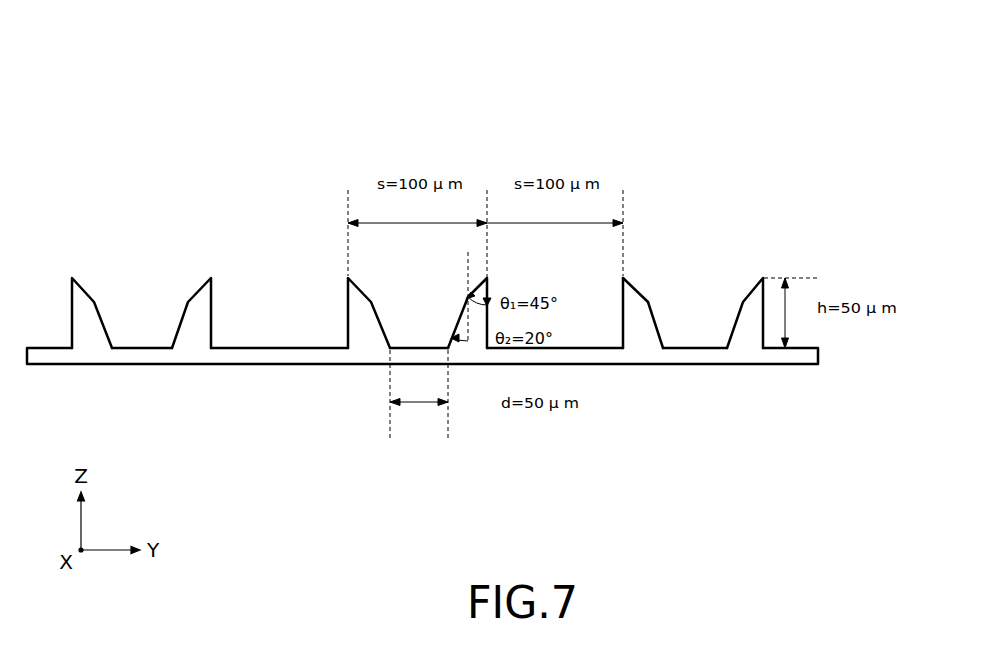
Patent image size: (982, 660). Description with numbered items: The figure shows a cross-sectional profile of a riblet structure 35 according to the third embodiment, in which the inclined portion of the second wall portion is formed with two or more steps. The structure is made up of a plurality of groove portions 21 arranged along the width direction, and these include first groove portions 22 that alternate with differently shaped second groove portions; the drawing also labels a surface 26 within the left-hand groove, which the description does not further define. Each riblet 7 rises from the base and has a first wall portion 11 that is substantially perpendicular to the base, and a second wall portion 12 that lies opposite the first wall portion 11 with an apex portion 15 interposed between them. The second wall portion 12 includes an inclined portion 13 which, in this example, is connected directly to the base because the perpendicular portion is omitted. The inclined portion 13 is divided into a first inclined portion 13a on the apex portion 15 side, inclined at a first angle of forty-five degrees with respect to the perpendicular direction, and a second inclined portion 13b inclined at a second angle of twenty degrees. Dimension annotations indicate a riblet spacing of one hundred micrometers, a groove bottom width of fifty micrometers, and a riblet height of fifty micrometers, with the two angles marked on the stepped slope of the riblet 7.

The riblet structure 35 is at (481, 72).
The groove portions 21 is at (288, 192).
The first inclined surface of groove 26 is at (138, 305).
The first groove portions 22 is at (278, 298).
The riblet 7 is at (376, 292).
The first wall portion 11 is at (622, 317).
The inclined portion 13 is at (635, 187).
The first inclined portion 13a is at (636, 289).
The second inclined portion 13b is at (651, 308).
The second wall portion 12 is at (654, 320).
The apex portion 15 is at (765, 277).